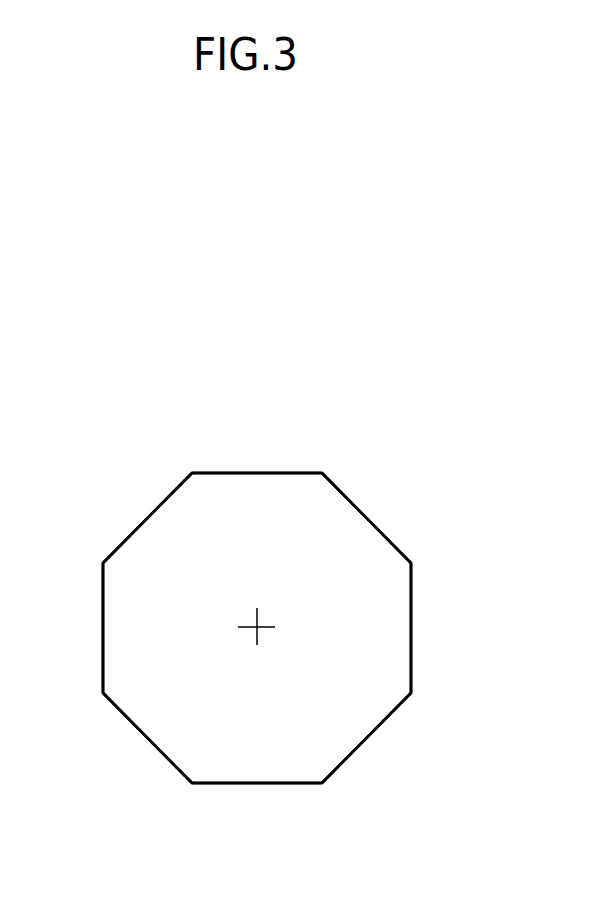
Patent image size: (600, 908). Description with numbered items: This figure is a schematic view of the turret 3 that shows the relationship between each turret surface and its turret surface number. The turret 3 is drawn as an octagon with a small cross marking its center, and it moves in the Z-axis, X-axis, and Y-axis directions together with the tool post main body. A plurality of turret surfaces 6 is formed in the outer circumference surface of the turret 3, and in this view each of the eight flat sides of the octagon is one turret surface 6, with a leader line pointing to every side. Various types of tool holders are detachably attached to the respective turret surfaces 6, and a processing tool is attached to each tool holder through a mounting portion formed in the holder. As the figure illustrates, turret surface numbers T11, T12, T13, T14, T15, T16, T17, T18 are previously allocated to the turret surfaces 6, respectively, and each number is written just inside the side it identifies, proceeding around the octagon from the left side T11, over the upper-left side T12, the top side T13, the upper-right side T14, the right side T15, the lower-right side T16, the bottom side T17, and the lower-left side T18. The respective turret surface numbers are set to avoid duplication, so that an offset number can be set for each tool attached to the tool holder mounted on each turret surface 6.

The turret 3 is at (378, 578).
The turret surface 6 is at (143, 517).
The turret surface number T11 is at (131, 628).
The turret surface number T12 is at (150, 518).
The turret surface number T13 is at (257, 493).
The turret surface number T14 is at (366, 518).
The turret surface number T15 is at (387, 628).
The turret surface number T16 is at (366, 735).
The turret surface number T17 is at (257, 757).
The turret surface number T18 is at (147, 738).